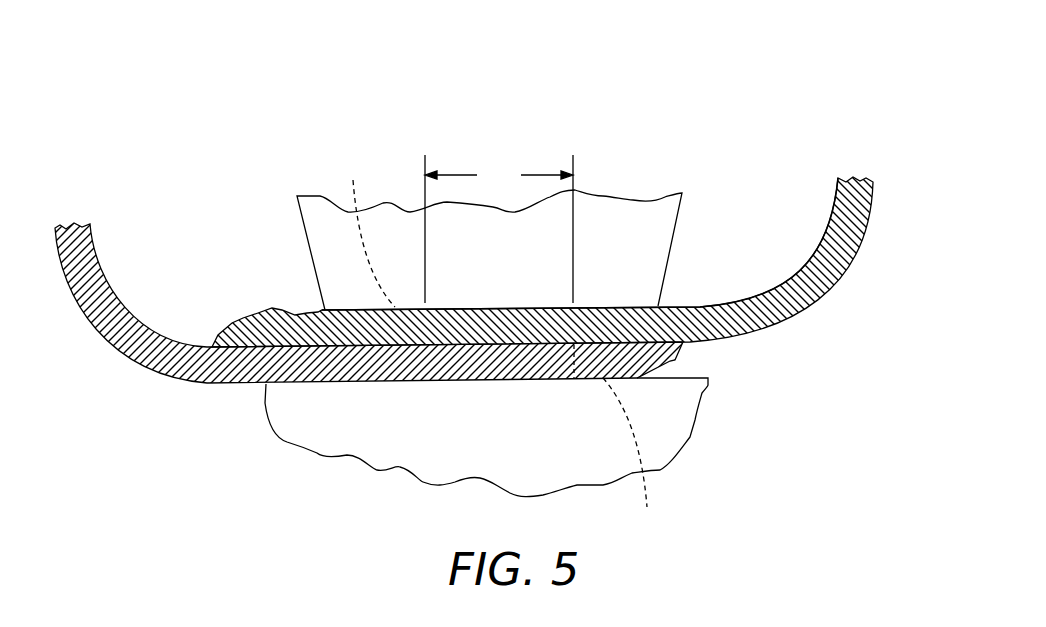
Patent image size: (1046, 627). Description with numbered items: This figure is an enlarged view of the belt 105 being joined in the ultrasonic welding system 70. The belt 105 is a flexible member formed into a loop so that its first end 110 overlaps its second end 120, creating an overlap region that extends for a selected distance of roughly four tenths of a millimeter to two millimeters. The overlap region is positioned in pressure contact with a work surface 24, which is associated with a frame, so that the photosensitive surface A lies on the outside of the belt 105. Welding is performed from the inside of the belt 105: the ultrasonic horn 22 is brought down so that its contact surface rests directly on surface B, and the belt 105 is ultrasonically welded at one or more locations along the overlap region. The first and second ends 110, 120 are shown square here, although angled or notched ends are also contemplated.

The ultrasonic welding system 70 is at (714, 116).
The ultrasonic horn 22 is at (310, 237).
The work surface 24 is at (670, 380).
The belt 105 is at (777, 330).
The first end 110 is at (365, 231).
The second end 120 is at (621, 441).
The photosensitive surface A is at (235, 385).
The surface B is at (700, 305).